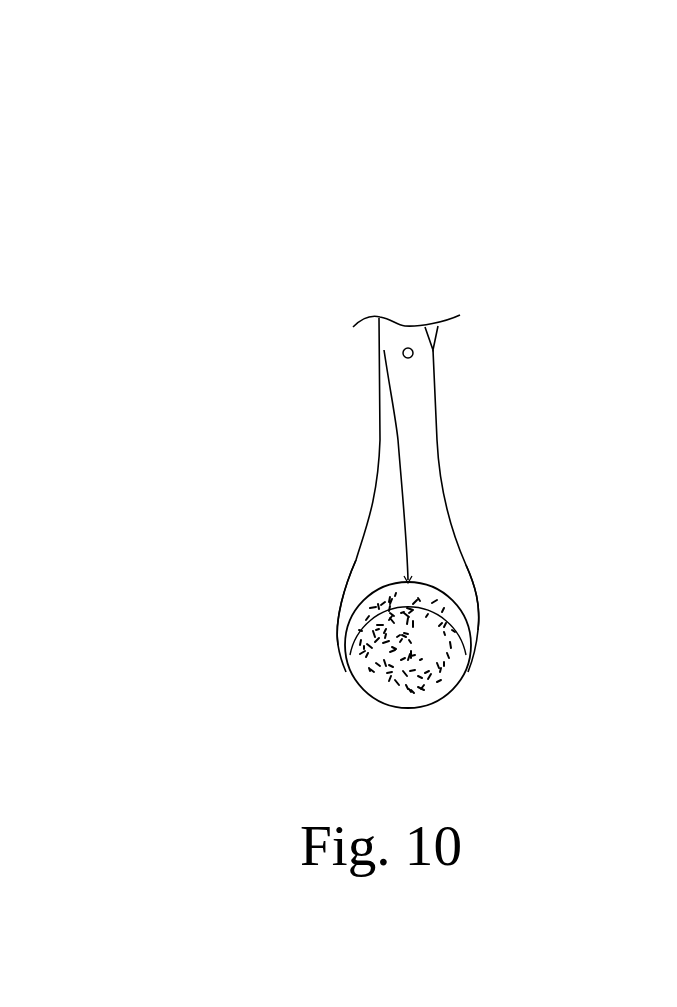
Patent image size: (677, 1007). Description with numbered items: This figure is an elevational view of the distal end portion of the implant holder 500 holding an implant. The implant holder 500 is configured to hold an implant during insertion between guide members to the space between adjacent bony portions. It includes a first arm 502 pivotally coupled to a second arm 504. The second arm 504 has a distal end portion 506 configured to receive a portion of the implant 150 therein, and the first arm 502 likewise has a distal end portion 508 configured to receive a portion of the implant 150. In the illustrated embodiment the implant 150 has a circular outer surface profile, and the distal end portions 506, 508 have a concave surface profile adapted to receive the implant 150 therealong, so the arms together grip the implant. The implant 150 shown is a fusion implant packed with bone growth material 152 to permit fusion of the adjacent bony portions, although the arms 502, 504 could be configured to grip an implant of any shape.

The implant holder 500 is at (540, 383).
The first arm 502 is at (370, 355).
The second arm 504 is at (462, 330).
The distal end portion 506 is at (357, 550).
The distal end portion 508 is at (480, 606).
The implant 150 is at (342, 692).
The bone growth material 152 is at (432, 686).